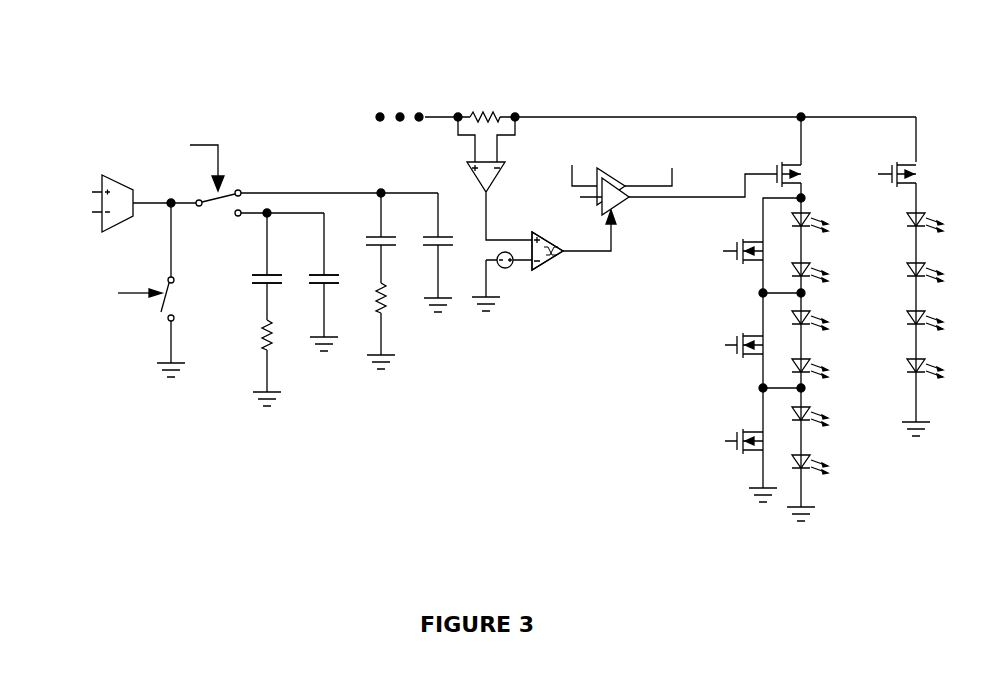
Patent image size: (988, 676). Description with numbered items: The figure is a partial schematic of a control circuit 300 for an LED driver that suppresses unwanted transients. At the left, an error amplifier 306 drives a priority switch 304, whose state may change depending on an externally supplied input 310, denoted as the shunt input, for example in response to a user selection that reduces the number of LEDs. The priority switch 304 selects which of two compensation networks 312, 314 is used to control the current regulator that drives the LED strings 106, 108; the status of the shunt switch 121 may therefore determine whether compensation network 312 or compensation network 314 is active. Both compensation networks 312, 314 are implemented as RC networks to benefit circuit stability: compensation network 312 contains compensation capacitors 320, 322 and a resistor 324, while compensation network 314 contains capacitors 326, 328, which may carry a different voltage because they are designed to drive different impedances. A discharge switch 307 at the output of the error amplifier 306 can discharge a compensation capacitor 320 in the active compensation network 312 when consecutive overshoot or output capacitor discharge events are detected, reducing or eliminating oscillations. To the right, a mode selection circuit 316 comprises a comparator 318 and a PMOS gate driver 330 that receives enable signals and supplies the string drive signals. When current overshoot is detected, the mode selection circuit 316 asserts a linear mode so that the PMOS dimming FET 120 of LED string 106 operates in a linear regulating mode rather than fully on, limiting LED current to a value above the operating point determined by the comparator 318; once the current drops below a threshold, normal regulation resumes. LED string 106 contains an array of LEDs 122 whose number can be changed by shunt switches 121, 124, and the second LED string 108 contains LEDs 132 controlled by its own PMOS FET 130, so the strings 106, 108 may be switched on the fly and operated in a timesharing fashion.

The control circuit 300 is at (485, 41).
The error amplifier 306 is at (88, 204).
The input 310 is at (125, 146).
The priority switch 304 is at (236, 188).
The discharge switch 307 is at (160, 322).
The compensation network 312 is at (269, 328).
The compensation capacitor 320 is at (252, 277).
The resistor 324 is at (255, 338).
The compensation capacitor 322 is at (318, 293).
The compensation network 314 is at (395, 318).
The capacitor 326 is at (368, 253).
The capacitor 328 is at (430, 253).
The mode selection circuit 316 is at (529, 346).
The comparator 318 is at (537, 278).
The PMOS gate driver 330 is at (613, 170).
The LED string 106 is at (786, 277).
The LED string 108 is at (880, 234).
The switch 120 is at (777, 166).
The switch 121 is at (732, 262).
The switch 124 is at (735, 338).
The LED 122 is at (830, 462).
The switch 130 is at (892, 166).
The LED 132 is at (907, 220).